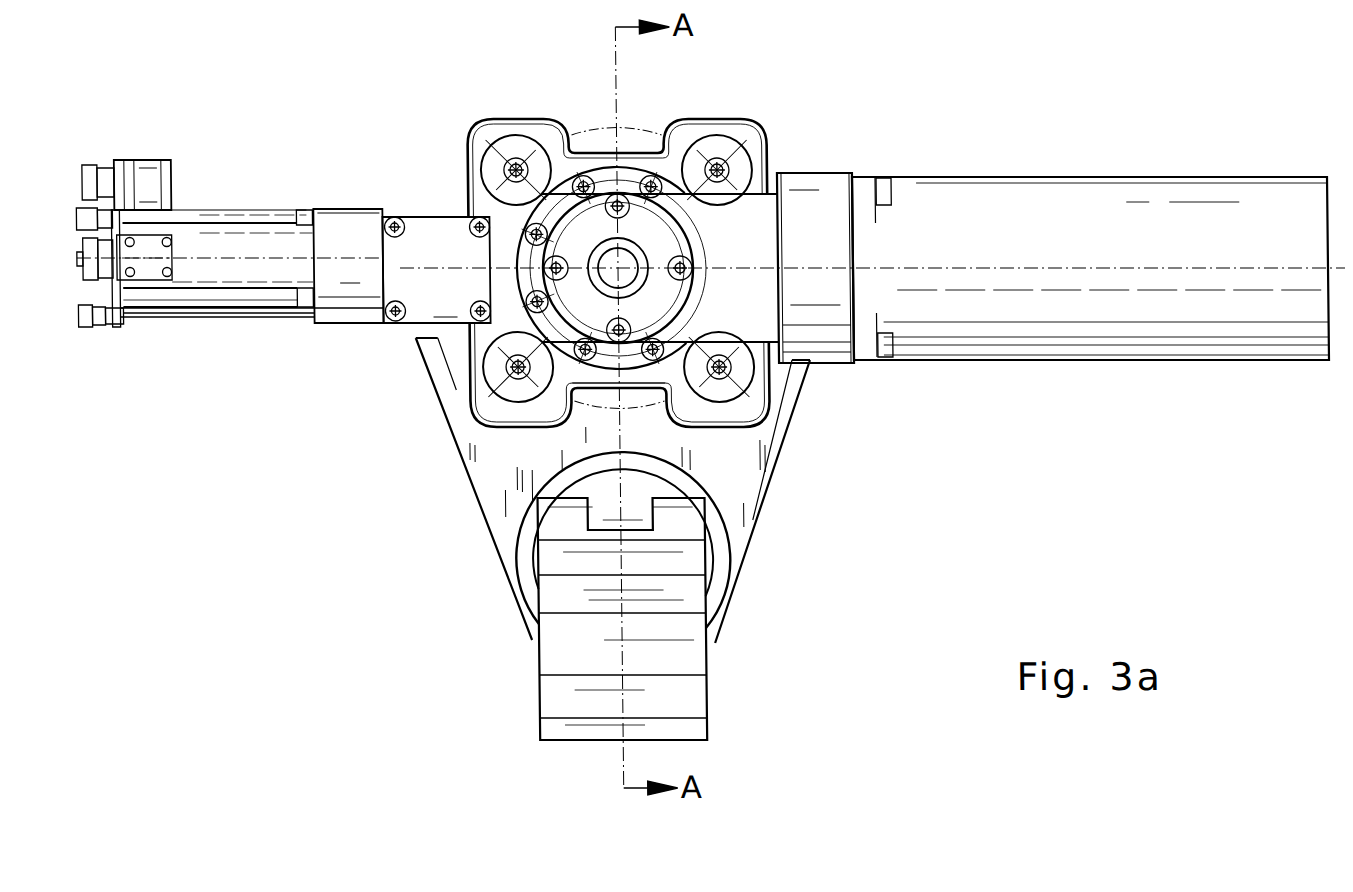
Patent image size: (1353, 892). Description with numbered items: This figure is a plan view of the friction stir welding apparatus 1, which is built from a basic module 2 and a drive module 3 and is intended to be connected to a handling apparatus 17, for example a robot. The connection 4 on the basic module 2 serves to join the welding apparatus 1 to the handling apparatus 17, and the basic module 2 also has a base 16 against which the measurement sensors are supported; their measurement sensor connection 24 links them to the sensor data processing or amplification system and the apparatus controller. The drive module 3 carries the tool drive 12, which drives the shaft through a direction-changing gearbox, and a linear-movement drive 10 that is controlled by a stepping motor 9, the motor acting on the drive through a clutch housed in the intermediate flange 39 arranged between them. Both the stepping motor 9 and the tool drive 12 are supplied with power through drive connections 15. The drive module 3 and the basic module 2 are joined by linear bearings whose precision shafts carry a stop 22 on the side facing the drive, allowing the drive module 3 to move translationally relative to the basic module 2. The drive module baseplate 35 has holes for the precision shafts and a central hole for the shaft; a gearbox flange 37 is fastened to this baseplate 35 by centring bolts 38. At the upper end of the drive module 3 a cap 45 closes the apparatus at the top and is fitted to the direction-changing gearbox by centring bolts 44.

The welding apparatus 1 is at (277, 502).
The basic module 2 is at (750, 465).
The drive module 3 is at (854, 143).
The connection 4 is at (729, 642).
The stepping motor 9 is at (262, 247).
The linear-movement drive 10 is at (440, 240).
The tool drive 12 is at (1128, 203).
The drive connections 15 is at (126, 157).
The base 16 is at (763, 448).
The handling apparatus 17 is at (704, 700).
The stop 22 is at (741, 377).
The measurement sensor connection 24 is at (84, 328).
The drive module baseplate 35 is at (739, 127).
The gearbox flange 37 is at (604, 385).
The centring bolts 38 is at (598, 400).
The intermediate flange 39 is at (342, 232).
The centring bolts 44 is at (640, 212).
The cap 45 is at (646, 165).